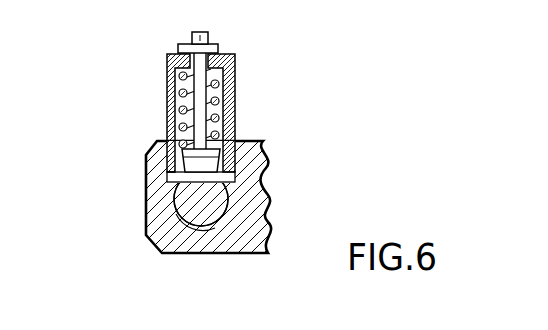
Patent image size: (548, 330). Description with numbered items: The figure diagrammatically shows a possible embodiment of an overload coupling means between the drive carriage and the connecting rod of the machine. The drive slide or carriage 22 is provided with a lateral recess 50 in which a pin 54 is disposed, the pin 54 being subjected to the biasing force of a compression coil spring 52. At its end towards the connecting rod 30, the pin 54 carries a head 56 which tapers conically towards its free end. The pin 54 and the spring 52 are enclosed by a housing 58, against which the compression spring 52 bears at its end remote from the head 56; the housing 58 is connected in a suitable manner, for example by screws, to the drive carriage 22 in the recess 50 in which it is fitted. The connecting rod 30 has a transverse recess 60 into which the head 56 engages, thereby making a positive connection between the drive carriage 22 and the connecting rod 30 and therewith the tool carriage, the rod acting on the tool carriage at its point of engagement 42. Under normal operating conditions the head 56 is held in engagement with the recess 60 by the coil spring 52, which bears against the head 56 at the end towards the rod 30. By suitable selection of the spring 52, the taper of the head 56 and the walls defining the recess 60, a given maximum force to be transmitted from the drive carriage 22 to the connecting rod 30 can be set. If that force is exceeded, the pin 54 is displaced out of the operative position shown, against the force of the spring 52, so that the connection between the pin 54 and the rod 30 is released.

The drive carriage 22 is at (153, 182).
The connecting rod 30 is at (211, 205).
The point of engagement 42 is at (183, 212).
The lateral recess 50 is at (231, 178).
The compression coil spring 52 is at (232, 96).
The pin 54 is at (183, 101).
The head 56 is at (237, 163).
The housing 58 is at (168, 70).
The transverse recess 60 is at (165, 168).